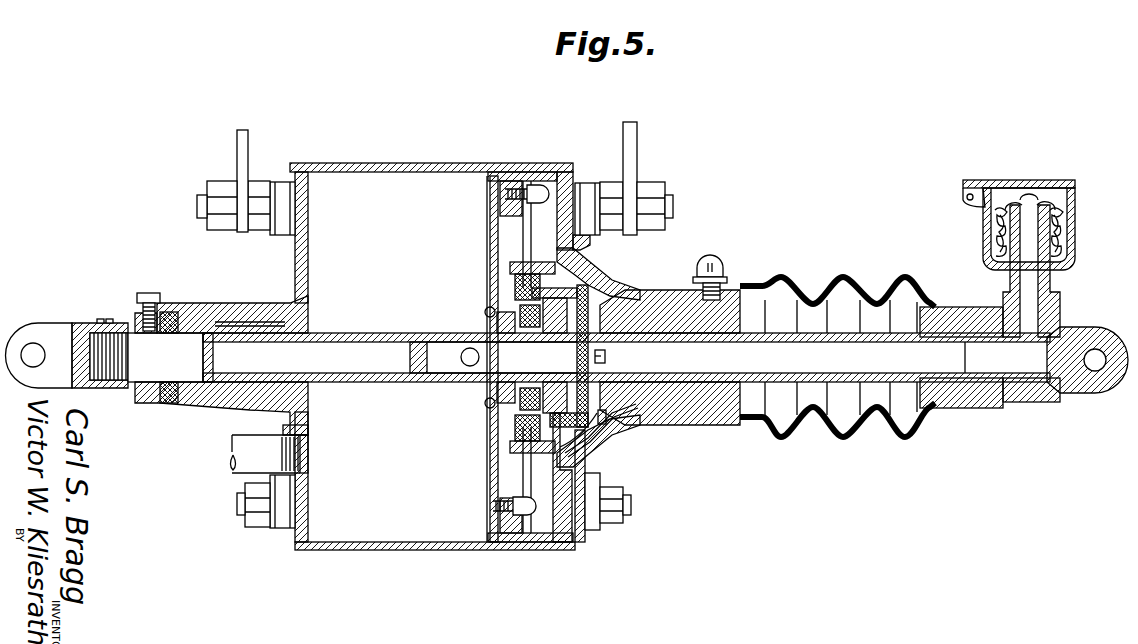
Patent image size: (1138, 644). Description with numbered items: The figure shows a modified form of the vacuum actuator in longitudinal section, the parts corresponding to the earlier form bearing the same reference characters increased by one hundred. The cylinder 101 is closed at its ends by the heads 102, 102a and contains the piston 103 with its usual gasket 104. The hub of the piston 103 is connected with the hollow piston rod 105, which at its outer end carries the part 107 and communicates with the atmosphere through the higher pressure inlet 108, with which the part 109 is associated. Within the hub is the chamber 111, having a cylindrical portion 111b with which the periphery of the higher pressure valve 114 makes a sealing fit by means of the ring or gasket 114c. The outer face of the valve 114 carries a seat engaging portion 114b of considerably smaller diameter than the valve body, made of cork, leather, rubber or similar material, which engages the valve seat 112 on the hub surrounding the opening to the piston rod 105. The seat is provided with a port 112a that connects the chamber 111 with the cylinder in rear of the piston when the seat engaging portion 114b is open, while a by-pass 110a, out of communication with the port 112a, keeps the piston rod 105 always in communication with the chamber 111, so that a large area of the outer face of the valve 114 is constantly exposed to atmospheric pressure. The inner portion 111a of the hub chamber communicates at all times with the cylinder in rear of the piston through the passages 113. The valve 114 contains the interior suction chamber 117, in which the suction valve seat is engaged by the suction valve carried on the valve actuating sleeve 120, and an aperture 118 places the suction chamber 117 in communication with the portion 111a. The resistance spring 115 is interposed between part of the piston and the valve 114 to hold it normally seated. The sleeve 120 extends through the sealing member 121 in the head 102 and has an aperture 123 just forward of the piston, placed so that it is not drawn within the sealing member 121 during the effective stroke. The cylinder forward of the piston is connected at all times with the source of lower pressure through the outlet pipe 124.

The cylinder 101 is at (408, 165).
The head 102 is at (292, 262).
The head 102a is at (579, 539).
The piston 103 is at (495, 218).
The gasket 104 is at (512, 170).
The hollow piston rod 105 is at (798, 305).
The rod end eye 107 is at (1058, 337).
The higher pressure inlet 108 is at (1020, 282).
The packing cup 109 is at (1074, 218).
The by-pass 110a is at (666, 290).
The chamber 111 is at (595, 430).
The portion of the piston hub chamber 111a is at (512, 410).
The cylindrical portion 111b is at (565, 256).
The valve seat 112 is at (607, 347).
The port 112a is at (632, 412).
The passages 113 is at (558, 238).
The higher pressure valve 114 is at (598, 288).
The seat engaging portion 114b is at (612, 428).
The ring or gasket 114c is at (525, 268).
The resistance spring 115 is at (485, 312).
The suction chamber 117 is at (604, 422).
The aperture 118 is at (502, 357).
The valve actuating sleeve 120 is at (323, 342).
The sealing member 121 is at (236, 406).
The aperture 123 is at (470, 366).
The outlet pipe 124 is at (233, 473).